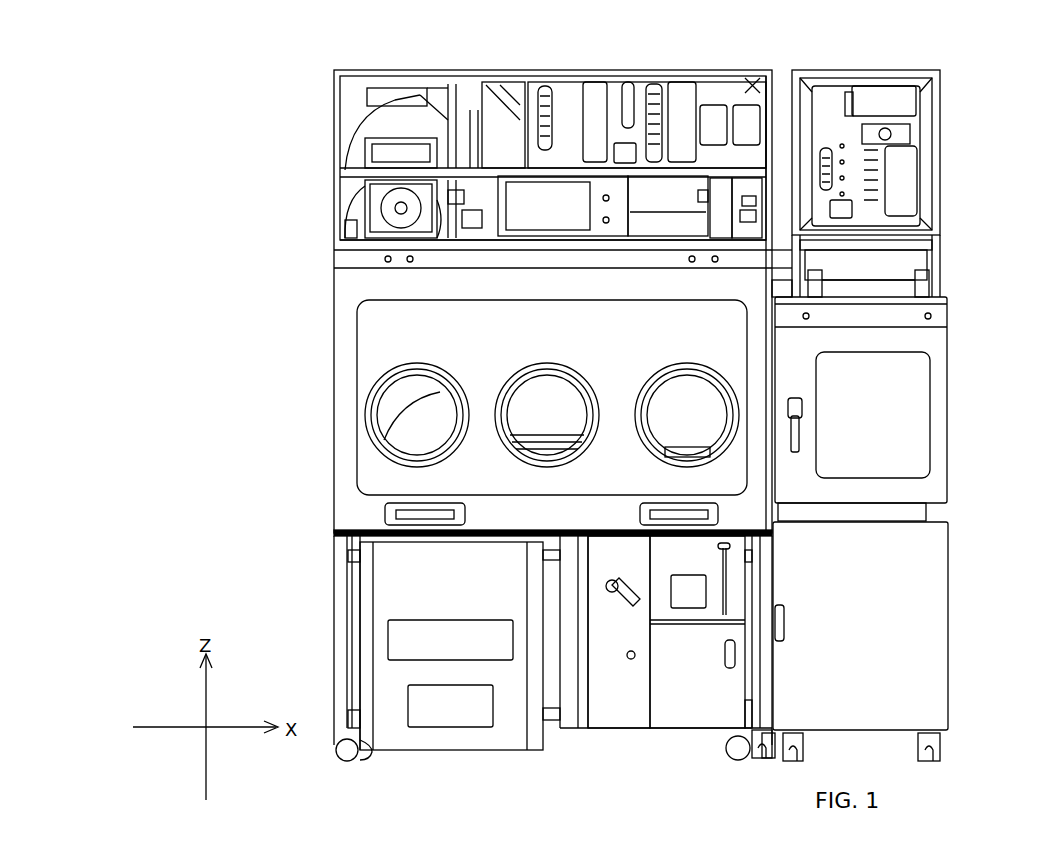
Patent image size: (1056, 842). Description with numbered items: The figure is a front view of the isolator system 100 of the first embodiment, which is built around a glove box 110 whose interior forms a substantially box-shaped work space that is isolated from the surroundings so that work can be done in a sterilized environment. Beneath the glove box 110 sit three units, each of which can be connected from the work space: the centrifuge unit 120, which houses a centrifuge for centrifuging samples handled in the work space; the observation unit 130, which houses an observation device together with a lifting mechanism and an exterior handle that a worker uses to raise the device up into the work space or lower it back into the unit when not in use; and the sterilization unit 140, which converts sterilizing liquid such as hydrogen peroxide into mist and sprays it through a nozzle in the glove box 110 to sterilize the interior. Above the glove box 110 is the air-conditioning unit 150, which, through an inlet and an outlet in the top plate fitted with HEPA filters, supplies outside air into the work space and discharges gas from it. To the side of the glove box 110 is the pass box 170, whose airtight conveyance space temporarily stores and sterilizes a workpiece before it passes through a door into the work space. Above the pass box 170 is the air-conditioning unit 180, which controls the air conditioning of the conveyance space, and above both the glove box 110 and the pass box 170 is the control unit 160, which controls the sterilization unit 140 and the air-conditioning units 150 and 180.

The isolator system 100 is at (314, 103).
The glove box 110 is at (333, 316).
The centrifuge unit 120 is at (470, 745).
The observation unit 130 is at (617, 717).
The sterilization unit 140 is at (680, 717).
The air-conditioning unit 150 is at (362, 197).
The control unit 160 is at (826, 135).
The pass box 170 is at (947, 380).
The air-conditioning unit 180 is at (889, 262).